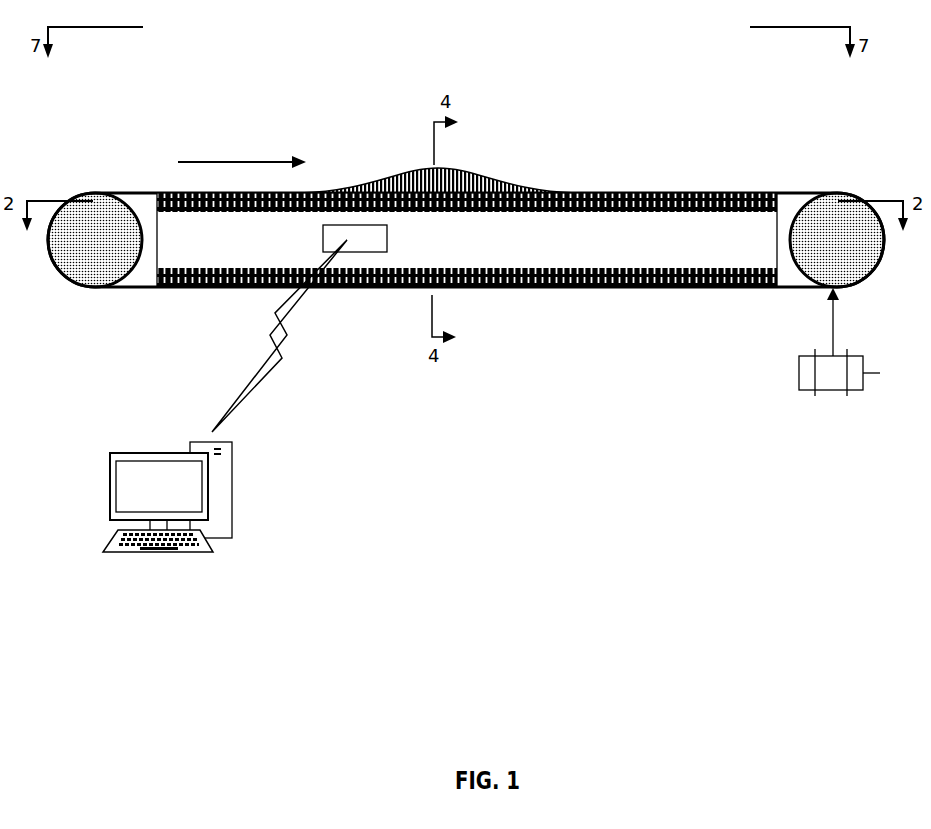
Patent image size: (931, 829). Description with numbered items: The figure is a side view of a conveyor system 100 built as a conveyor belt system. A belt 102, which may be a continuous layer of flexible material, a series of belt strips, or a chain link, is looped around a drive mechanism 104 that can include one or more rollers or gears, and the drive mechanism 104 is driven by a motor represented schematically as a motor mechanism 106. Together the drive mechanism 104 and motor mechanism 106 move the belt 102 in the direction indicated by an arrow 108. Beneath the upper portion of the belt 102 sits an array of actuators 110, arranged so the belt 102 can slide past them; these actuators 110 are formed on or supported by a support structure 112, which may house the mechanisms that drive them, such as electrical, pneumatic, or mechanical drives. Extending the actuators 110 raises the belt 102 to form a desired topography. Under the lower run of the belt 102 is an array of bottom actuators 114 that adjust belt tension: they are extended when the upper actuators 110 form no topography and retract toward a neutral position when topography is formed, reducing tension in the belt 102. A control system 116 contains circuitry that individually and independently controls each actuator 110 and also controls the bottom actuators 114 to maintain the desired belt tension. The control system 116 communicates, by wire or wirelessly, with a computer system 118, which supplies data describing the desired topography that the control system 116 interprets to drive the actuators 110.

The conveyor system 100 is at (467, 217).
The belt 102 is at (798, 193).
The drive mechanism 104 is at (105, 222).
The motor mechanism 106 is at (832, 390).
The arrow 108 is at (240, 162).
The array of actuators 110 is at (713, 193).
The support structure 112 is at (467, 240).
The bottom actuators 114 is at (570, 287).
The control system 116 is at (323, 241).
The computer system 118 is at (110, 463).